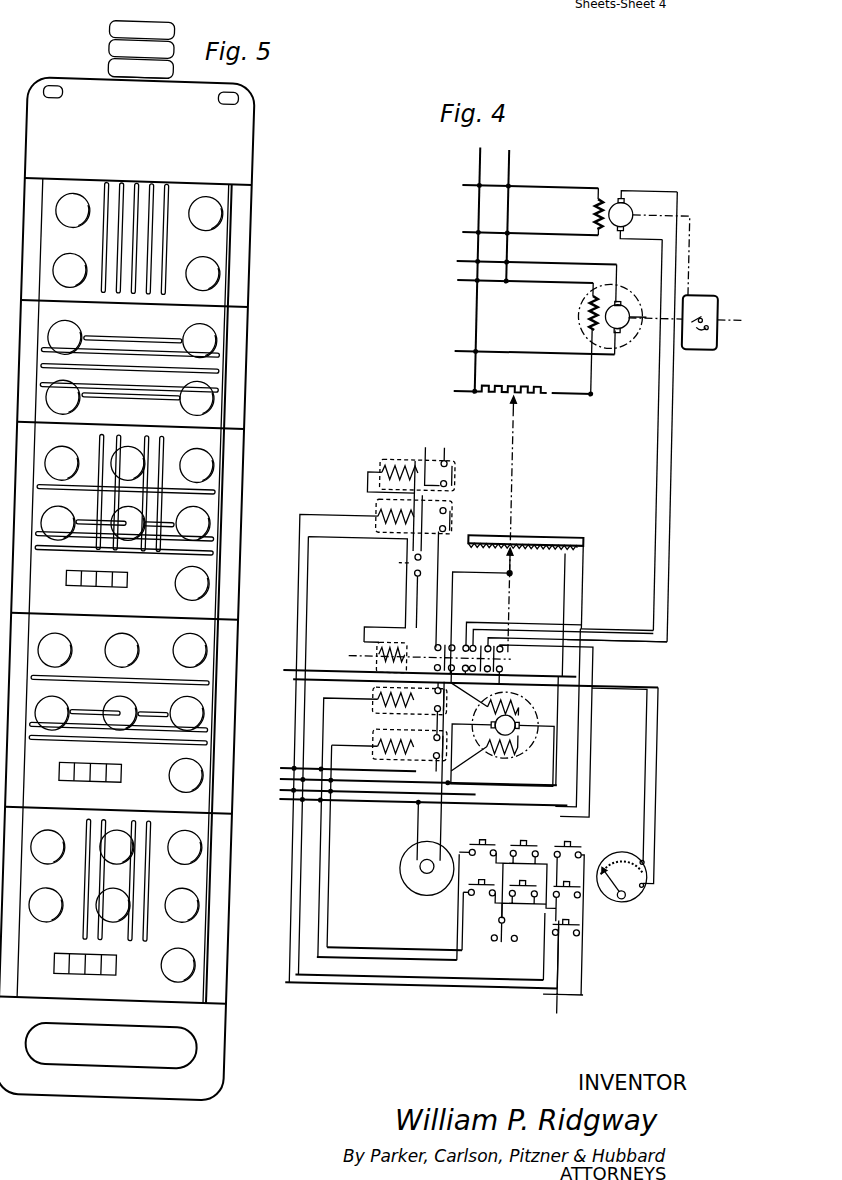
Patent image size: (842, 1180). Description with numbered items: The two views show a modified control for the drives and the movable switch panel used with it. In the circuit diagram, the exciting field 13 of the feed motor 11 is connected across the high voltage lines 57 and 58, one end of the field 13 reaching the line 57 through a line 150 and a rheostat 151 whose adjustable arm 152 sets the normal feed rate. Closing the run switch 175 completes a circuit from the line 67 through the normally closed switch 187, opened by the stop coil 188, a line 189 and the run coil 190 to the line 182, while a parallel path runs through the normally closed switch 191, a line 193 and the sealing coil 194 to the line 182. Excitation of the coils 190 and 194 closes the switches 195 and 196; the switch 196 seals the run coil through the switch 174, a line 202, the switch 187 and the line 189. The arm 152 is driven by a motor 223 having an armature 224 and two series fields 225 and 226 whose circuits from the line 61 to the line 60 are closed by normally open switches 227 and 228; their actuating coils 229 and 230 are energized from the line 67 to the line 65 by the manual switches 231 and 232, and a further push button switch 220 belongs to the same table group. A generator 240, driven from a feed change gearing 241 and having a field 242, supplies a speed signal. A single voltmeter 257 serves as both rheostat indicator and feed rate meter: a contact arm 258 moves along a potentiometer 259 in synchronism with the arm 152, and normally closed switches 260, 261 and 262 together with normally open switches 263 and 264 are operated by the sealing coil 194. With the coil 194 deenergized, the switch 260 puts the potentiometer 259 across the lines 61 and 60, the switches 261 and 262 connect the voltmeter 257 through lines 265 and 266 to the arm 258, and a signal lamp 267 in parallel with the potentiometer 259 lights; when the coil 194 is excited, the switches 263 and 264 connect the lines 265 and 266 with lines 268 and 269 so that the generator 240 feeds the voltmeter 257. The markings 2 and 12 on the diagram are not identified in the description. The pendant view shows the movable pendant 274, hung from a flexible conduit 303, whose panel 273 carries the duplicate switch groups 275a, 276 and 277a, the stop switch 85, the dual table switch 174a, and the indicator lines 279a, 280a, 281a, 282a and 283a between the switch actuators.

In FIG. 4, the rheostat contact arm connection 2 is at (507, 614).
In FIG. 4, the feed motor 11 is at (576, 338).
In FIG. 4, the motor armature 12 is at (622, 304).
In FIG. 4, the exciting field 13 is at (583, 314).
In FIG. 4, the high voltage line 57 is at (470, 152).
In FIG. 4, the high voltage line 58 is at (499, 158).
In FIG. 4, the line 60 is at (392, 805).
In FIG. 4, the line 61 is at (372, 786).
In FIG. 4, the line 65 is at (287, 772).
In FIG. 4, the line 67 is at (564, 1010).
In FIG. 5, the stop switch 85 is at (105, 1052).
In FIG. 4, the line 150 is at (588, 390).
In FIG. 4, the rheostat 151 is at (536, 390).
In FIG. 4, the adjustable arm 152 is at (513, 419).
In FIG. 4, the switch 174 is at (500, 944).
In FIG. 5, the dual switch 174a is at (97, 783).
In FIG. 4, the run switch 175 is at (512, 846).
In FIG. 4, the line 182 is at (285, 675).
In FIG. 4, the normally closed switch 187 is at (450, 520).
In FIG. 4, the stop coil 188 is at (376, 510).
In FIG. 4, the line 189 is at (366, 486).
In FIG. 4, the run coil 190 is at (392, 462).
In FIG. 4, the normally closed switch 191 is at (413, 580).
In FIG. 4, the line 193 is at (362, 634).
In FIG. 4, the sealing coil 194 is at (378, 661).
In FIG. 4, the switch 195 is at (452, 477).
In FIG. 4, the switch 196 is at (432, 654).
In FIG. 4, the line 202 is at (356, 694).
In FIG. 4, the switch 220 is at (565, 848).
In FIG. 4, the motor 223 is at (520, 758).
In FIG. 4, the armature 224 is at (492, 725).
In FIG. 4, the series field 225 is at (524, 748).
In FIG. 4, the series field 226 is at (520, 702).
In FIG. 4, the normally open switch 227 is at (432, 752).
In FIG. 4, the normally open switch 228 is at (436, 708).
In FIG. 4, the actuating coil 229 is at (378, 740).
In FIG. 4, the actuating coil 230 is at (378, 710).
In FIG. 4, the manually operable switch 231 is at (470, 895).
In FIG. 4, the manually operable switch 232 is at (474, 850).
In FIG. 4, the generator 240 is at (626, 207).
In FIG. 4, the feed change gearing 241 is at (711, 345).
In FIG. 4, the generator field 242 is at (586, 215).
In FIG. 4, the voltmeter 257 is at (628, 856).
In FIG. 4, the contact arm 258 is at (512, 570).
In FIG. 4, the potentiometer 259 is at (546, 540).
In FIG. 4, the normally closed switch 260 is at (490, 662).
In FIG. 4, the normally closed switch 261 is at (466, 618).
In FIG. 4, the normally closed switch 262 is at (474, 626).
In FIG. 4, the normally open switch 263 is at (505, 640).
In FIG. 4, the normally open switch 264 is at (488, 634).
In FIG. 4, the line 265 is at (646, 732).
In FIG. 4, the line 266 is at (658, 760).
In FIG. 4, the signal lamp 267 is at (420, 874).
In FIG. 4, the line 268 is at (650, 462).
In FIG. 4, the line 269 is at (668, 486).
In FIG. 5, the panel 273 is at (240, 325).
In FIG. 5, the movable pendant 274 is at (250, 163).
In FIG. 5, the spindle control group 275a is at (236, 194).
In FIG. 5, the rail control group 276 is at (237, 840).
In FIG. 5, the head and ram control group 277a is at (230, 464).
In FIG. 5, the horizontal indicator lines 279a is at (157, 338).
In FIG. 5, the vertical indicator lines 280a is at (171, 183).
In FIG. 5, the horizontal indicator lines 281a is at (112, 678).
In FIG. 5, the vertical indicator lines 282a is at (174, 926).
In FIG. 5, the cross indicator lines 283a is at (226, 492).
In FIG. 5, the flexible conduit 303 is at (108, 46).